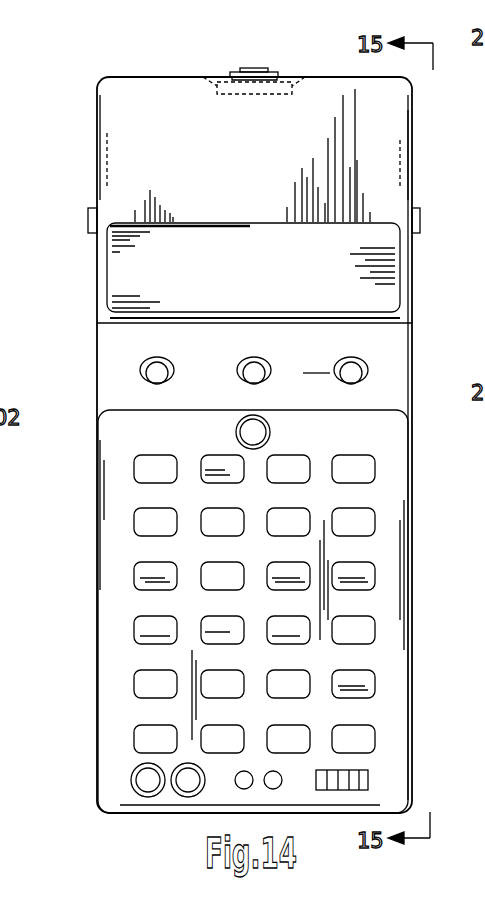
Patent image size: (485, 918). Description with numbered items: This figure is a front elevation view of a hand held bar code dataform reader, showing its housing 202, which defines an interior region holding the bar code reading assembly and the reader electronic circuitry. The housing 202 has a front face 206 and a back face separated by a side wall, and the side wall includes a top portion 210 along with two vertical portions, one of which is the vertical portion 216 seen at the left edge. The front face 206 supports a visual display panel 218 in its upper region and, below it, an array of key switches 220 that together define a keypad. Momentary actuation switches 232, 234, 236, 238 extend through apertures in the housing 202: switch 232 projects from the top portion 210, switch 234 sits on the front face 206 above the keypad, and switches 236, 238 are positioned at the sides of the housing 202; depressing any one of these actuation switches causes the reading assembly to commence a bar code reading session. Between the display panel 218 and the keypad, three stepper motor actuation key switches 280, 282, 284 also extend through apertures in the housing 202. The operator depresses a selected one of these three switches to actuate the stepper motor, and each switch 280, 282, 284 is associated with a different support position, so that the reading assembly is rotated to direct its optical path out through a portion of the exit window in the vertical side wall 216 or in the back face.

The housing 202 is at (84, 200).
The front face 206 is at (257, 181).
The top portion 210 is at (172, 77).
The vertical portion 216 is at (97, 505).
The visual display panel 218 is at (262, 285).
The key switches 220 is at (365, 519).
The momentary actuation switch 232 is at (255, 68).
The momentary actuation switch 234 is at (257, 432).
The momentary actuation switch 236 is at (88, 222).
The momentary actuation switch 238 is at (420, 215).
The stepper motor actuation key switch 280 is at (152, 380).
The stepper motor actuation key switch 282 is at (253, 377).
The stepper motor actuation key switch 284 is at (352, 377).